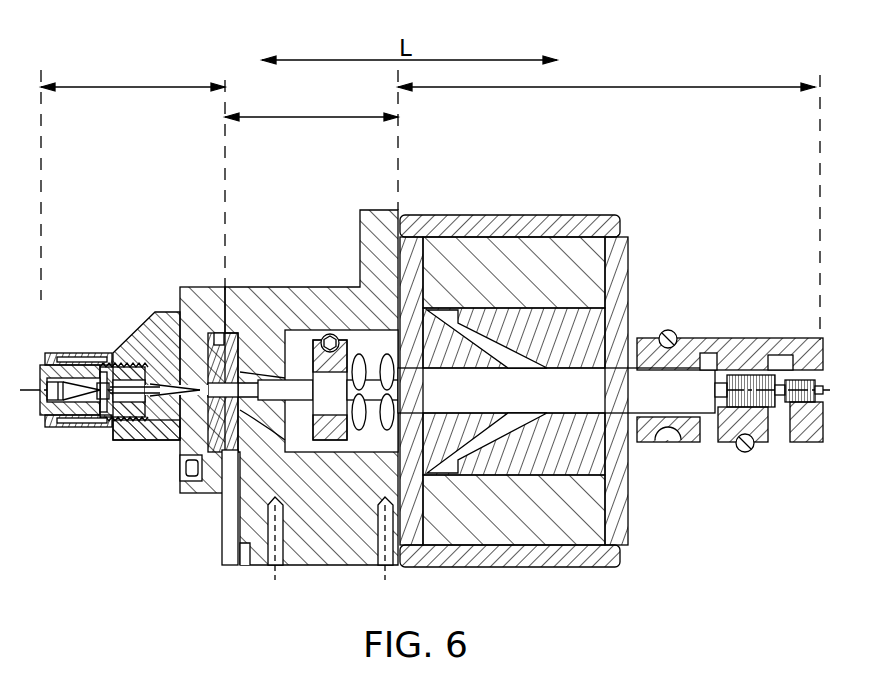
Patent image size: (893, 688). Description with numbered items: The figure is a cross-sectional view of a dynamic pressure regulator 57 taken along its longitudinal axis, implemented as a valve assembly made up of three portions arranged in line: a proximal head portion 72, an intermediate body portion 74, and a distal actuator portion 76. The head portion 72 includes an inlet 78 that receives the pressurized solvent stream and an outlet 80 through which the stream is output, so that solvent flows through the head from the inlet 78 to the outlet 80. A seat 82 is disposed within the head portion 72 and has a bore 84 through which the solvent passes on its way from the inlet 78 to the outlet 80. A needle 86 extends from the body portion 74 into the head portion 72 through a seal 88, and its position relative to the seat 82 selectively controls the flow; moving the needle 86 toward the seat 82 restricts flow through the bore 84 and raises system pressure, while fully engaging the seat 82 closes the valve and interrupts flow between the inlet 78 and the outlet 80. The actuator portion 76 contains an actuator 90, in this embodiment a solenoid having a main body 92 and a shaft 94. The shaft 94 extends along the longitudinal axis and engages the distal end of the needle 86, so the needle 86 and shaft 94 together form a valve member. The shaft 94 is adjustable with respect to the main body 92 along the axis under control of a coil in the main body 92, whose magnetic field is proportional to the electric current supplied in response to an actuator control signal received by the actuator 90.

The dynamic pressure regulator 57 is at (692, 50).
The proximal head portion 72 is at (131, 86).
The intermediate body portion 74 is at (329, 116).
The distal actuator portion 76 is at (616, 86).
The inlet 78 is at (141, 347).
The outlet 80 is at (40, 383).
The seat 82 is at (123, 403).
The bore 84 is at (111, 367).
The needle 86 is at (163, 402).
The seal 88 is at (183, 342).
The actuator 90 is at (505, 245).
The main body 92 is at (574, 262).
The shaft 94 is at (287, 408).